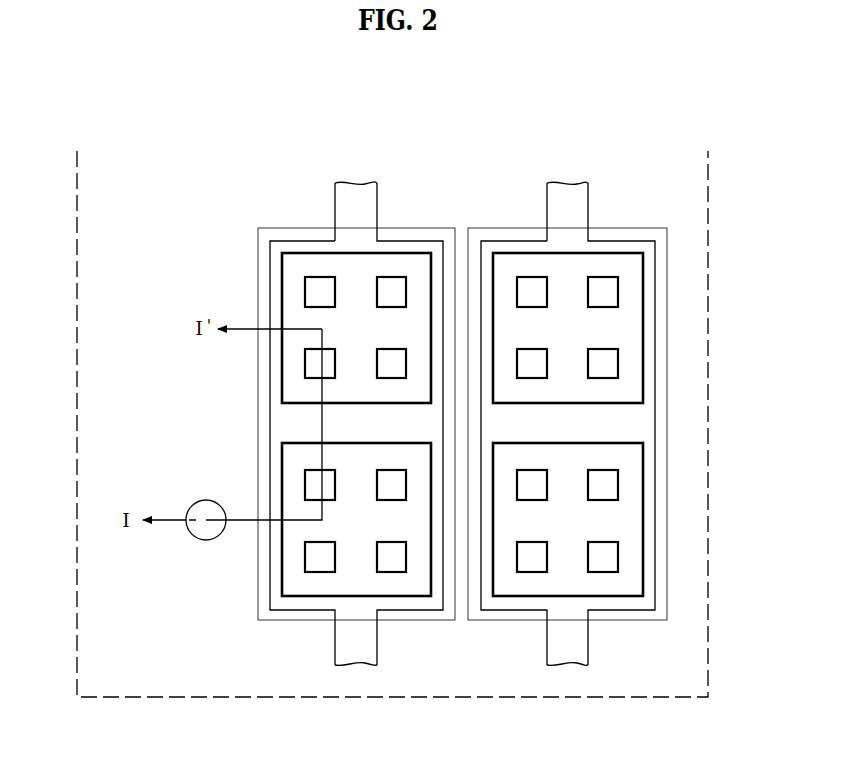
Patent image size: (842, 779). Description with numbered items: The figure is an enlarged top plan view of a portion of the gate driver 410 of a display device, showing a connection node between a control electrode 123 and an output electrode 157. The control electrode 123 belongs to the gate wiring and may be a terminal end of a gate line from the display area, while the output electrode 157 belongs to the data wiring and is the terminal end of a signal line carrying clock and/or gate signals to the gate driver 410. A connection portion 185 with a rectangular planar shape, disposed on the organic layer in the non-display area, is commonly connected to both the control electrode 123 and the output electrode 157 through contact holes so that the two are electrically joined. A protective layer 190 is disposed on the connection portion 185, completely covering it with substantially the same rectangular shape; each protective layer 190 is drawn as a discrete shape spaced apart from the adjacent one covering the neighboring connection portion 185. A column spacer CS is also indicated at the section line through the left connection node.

The gate driver 410 is at (146, 121).
The protective layer 190 is at (434, 228).
The connection portion 185 is at (398, 241).
The output electrode 157 is at (296, 252).
The control electrode 123 is at (643, 518).
The column spacer CS is at (205, 500).